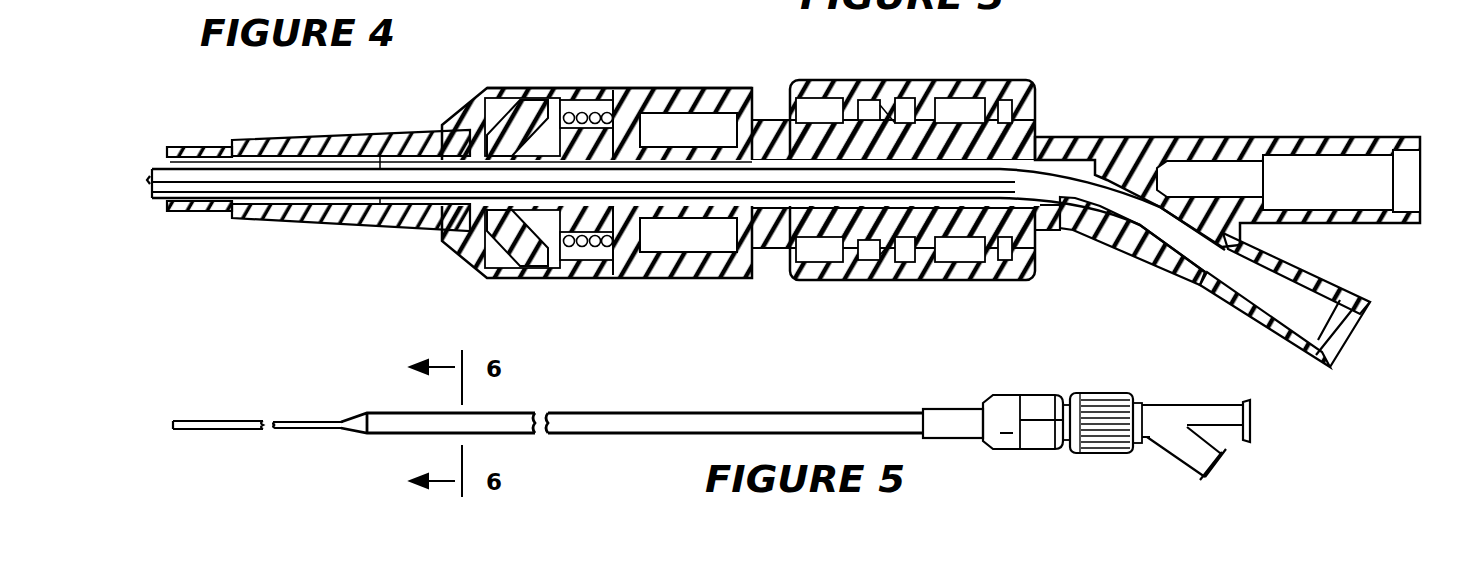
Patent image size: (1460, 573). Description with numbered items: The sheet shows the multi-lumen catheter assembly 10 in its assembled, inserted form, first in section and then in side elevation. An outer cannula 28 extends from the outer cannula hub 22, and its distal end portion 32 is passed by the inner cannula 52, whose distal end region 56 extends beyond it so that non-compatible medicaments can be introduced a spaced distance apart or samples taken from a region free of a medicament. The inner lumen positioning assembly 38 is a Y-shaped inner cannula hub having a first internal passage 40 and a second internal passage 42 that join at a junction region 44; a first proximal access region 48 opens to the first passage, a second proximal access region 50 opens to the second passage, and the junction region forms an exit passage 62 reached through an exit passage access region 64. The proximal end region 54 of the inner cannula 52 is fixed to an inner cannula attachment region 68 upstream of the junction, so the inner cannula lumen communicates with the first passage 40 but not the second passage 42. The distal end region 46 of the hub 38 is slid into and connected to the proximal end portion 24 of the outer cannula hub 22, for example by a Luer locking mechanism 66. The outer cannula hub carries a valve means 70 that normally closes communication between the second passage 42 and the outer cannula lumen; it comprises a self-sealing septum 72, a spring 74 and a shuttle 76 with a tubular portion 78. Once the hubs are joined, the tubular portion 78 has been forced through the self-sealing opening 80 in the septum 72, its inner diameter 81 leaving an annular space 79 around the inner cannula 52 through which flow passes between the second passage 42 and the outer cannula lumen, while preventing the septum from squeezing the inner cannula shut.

In FIG. 5, the multi-lumen catheter assembly 10 is at (797, 366).
In FIG. 4, the outer cannula hub 22 is at (623, 83).
In FIG. 5, the outer cannula hub 22 is at (1010, 390).
In FIG. 4, the proximal end portion 24 is at (878, 107).
In FIG. 4, the outer cannula 28 is at (180, 145).
In FIG. 5, the outer cannula 28 is at (713, 411).
In FIG. 5, the distal end portion 32 is at (370, 437).
In FIG. 4, the inner lumen positioning assembly 38 is at (1177, 130).
In FIG. 5, the inner lumen positioning assembly 38 is at (1165, 455).
In FIG. 4, the first internal passage 40 is at (1343, 347).
In FIG. 4, the second internal passage 42 is at (1400, 152).
In FIG. 4, the junction region 44 is at (1113, 171).
In FIG. 4, the distal end region 46 is at (832, 228).
In FIG. 4, the first proximal access region 48 is at (1353, 325).
In FIG. 4, the second proximal access region 50 is at (1425, 165).
In FIG. 4, the inner cannula 52 is at (212, 150).
In FIG. 5, the inner cannula 52 is at (290, 418).
In FIG. 4, the proximal end region 54 is at (1180, 268).
In FIG. 5, the distal end region 56 is at (190, 420).
In FIG. 4, the exit passage 62 is at (1076, 137).
In FIG. 4, the exit passage access region 64 is at (207, 207).
In FIG. 5, the Luer locking mechanism 66 is at (1107, 386).
In FIG. 4, the inner cannula attachment region 68 is at (1137, 262).
In FIG. 4, the valve means 70 is at (552, 75).
In FIG. 4, the self-sealing septum 72 is at (488, 240).
In FIG. 4, the spring 74 is at (613, 272).
In FIG. 4, the shuttle 76 is at (637, 100).
In FIG. 4, the tubular portion 78 is at (482, 150).
In FIG. 4, the annular space 79 is at (562, 258).
In FIG. 4, the self-sealing opening 80 is at (440, 205).
In FIG. 4, the inner diameter 81 is at (675, 235).